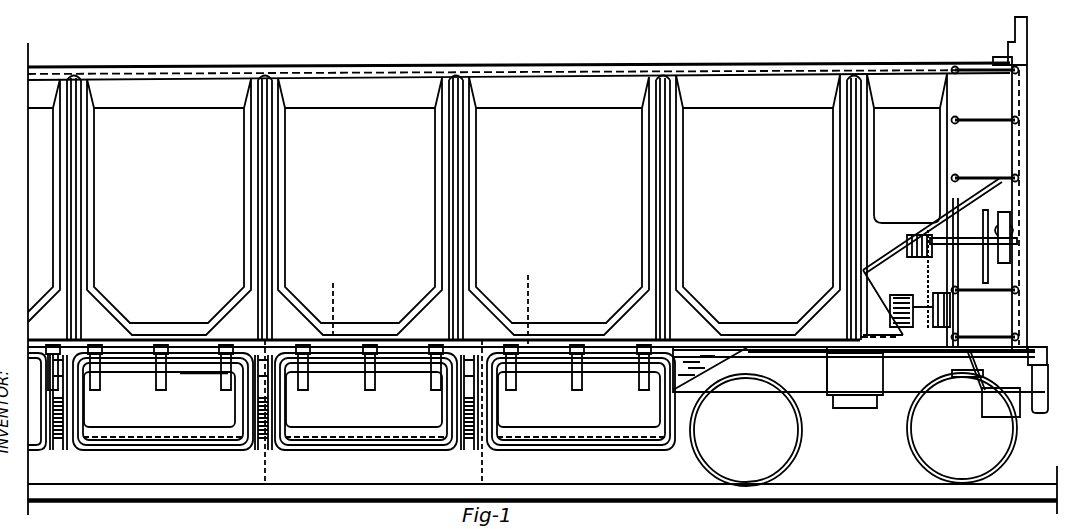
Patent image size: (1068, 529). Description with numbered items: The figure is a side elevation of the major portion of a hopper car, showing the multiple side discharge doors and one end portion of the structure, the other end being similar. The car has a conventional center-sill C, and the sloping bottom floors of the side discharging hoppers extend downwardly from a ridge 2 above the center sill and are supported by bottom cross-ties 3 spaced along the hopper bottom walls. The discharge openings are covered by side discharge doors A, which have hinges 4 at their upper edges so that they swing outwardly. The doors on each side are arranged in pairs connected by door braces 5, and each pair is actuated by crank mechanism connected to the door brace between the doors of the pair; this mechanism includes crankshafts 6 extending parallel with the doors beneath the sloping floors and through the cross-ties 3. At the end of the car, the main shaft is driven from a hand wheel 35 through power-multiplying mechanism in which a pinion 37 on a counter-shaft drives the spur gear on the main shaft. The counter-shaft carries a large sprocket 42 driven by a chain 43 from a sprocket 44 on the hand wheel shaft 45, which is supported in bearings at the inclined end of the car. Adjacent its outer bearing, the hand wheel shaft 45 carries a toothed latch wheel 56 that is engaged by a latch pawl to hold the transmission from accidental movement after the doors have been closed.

The ridge 2 is at (320, 293).
The bottom cross-ties 3 is at (515, 290).
The hinges 4 is at (218, 385).
The door braces 5 is at (170, 438).
The crankshafts 6 is at (68, 445).
The side discharge doors A is at (372, 399).
The center-sill C is at (733, 392).
The hand wheel 35 is at (990, 274).
The pinion 37 is at (896, 296).
The large sprocket 42 is at (928, 286).
The chain 43 is at (938, 280).
The sprocket 44 is at (910, 236).
The hand wheel shaft 45 is at (970, 248).
The toothed latch wheel 56 is at (1012, 258).